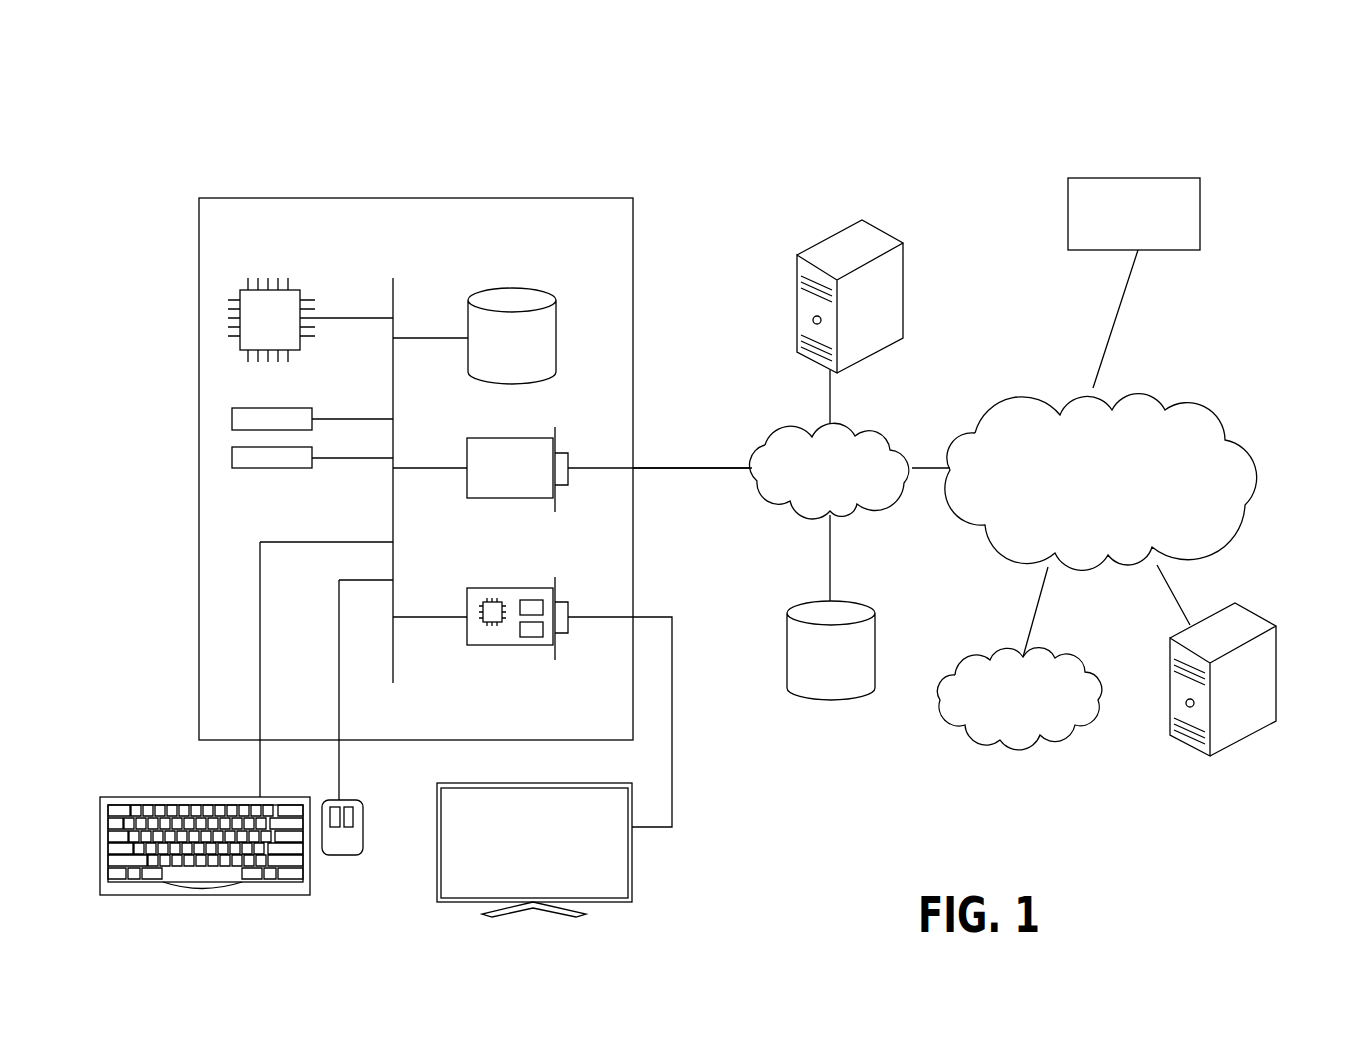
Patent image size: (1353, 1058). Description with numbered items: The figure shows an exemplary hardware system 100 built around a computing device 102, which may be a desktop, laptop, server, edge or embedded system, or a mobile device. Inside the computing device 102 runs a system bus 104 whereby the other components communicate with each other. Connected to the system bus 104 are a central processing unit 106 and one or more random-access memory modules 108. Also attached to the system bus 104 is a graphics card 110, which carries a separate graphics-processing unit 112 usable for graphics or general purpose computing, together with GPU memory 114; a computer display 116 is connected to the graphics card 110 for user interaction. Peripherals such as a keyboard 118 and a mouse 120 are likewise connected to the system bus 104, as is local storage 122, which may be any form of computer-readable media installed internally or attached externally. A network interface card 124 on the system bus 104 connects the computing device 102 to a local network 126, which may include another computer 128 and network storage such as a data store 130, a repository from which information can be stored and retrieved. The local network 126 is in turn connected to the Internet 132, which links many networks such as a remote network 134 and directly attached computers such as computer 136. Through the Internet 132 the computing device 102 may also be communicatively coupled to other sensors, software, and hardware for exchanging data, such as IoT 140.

The hardware system 100 is at (175, 110).
The computing device 102 is at (585, 198).
The system bus 104 is at (394, 290).
The central processing unit 106 is at (293, 290).
The random-access memory modules 108 is at (312, 417).
The graphics card 110 is at (548, 685).
The graphics-processing unit 112 is at (492, 622).
The GPU memory 114 is at (530, 637).
The computer display 116 is at (633, 880).
The keyboard 118 is at (208, 896).
The mouse 120 is at (340, 856).
The local storage 122 is at (557, 322).
The network interface card 124 is at (467, 452).
The local network 126 is at (883, 427).
The computer 128 is at (890, 237).
The data store 130 is at (865, 602).
The Internet 132 is at (1157, 383).
The remote network 134 is at (1073, 652).
The computer 136 is at (1252, 603).
The IoT 140 is at (1192, 178).